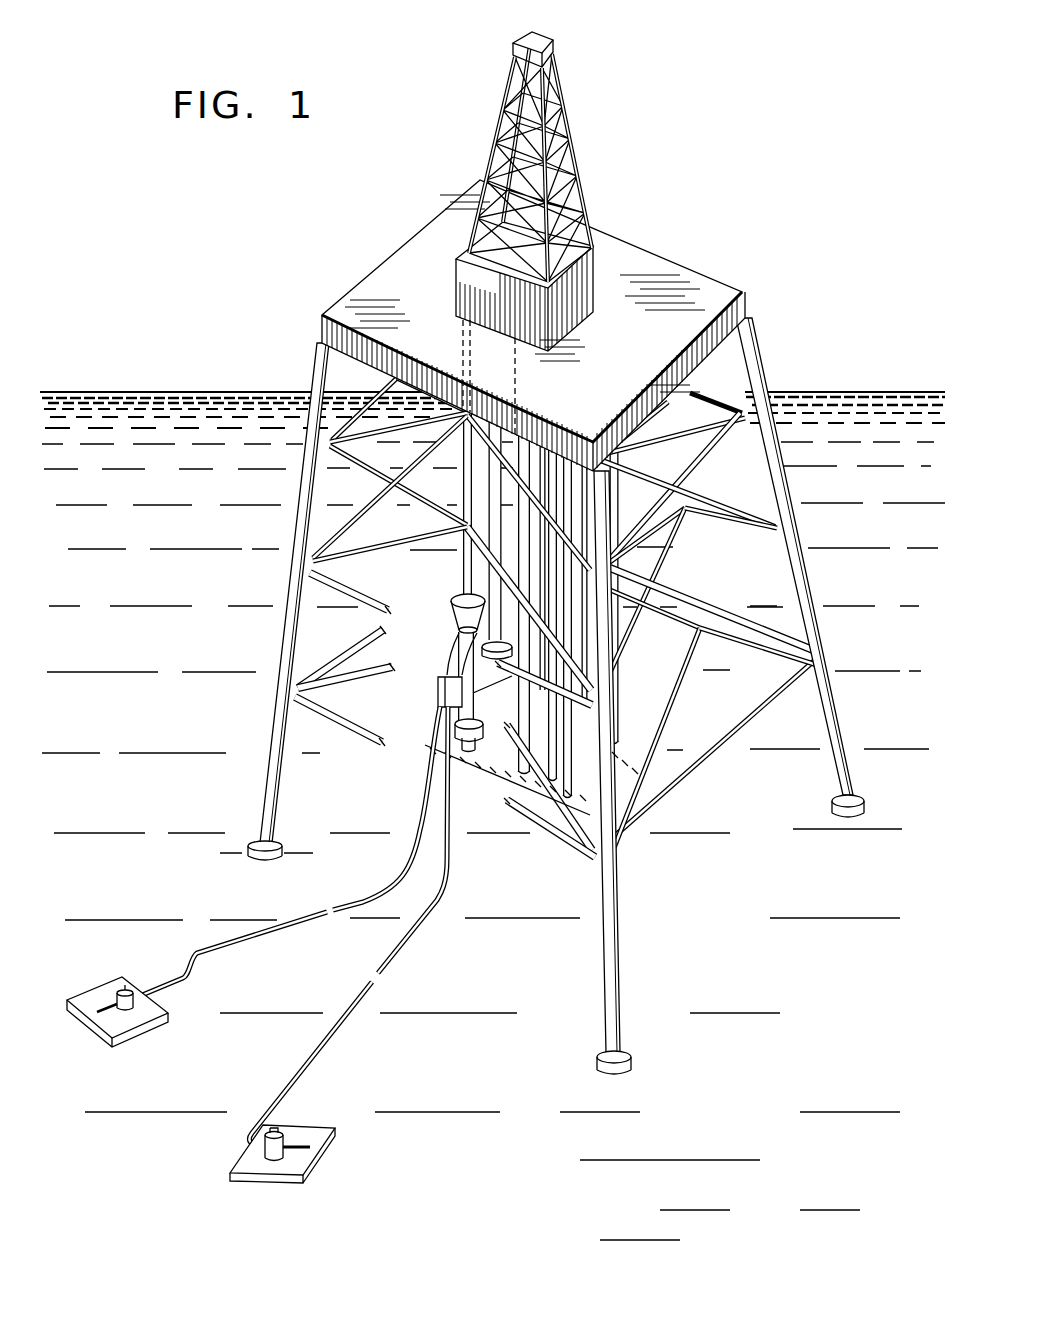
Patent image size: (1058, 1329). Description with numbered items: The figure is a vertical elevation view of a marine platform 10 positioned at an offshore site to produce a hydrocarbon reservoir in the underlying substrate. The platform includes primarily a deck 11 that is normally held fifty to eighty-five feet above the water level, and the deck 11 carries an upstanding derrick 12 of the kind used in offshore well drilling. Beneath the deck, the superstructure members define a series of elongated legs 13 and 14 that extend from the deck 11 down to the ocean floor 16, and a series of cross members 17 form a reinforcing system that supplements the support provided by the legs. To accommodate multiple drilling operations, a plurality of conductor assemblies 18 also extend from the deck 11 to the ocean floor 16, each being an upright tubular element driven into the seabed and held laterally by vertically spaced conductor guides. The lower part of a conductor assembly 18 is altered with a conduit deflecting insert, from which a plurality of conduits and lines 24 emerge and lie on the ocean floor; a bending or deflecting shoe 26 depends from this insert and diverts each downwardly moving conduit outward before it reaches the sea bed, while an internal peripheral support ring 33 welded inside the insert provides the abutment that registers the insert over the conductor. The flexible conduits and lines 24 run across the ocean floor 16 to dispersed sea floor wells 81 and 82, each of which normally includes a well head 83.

The marine platform 10 is at (465, 607).
The deck 11 is at (743, 292).
The derrick 12 is at (498, 112).
The leg 13 is at (292, 640).
The leg 14 is at (614, 893).
The ocean floor 16 is at (243, 847).
The cross members 17 is at (358, 468).
The conductor assembly 18 is at (463, 578).
The conduits and lines 24 is at (363, 898).
The deflecting shoe 26 is at (440, 670).
The internal peripheral support ring 33 is at (442, 638).
The sea floor well 81 is at (145, 996).
The sea floor well 82 is at (283, 1140).
The well head 83 is at (137, 1010).